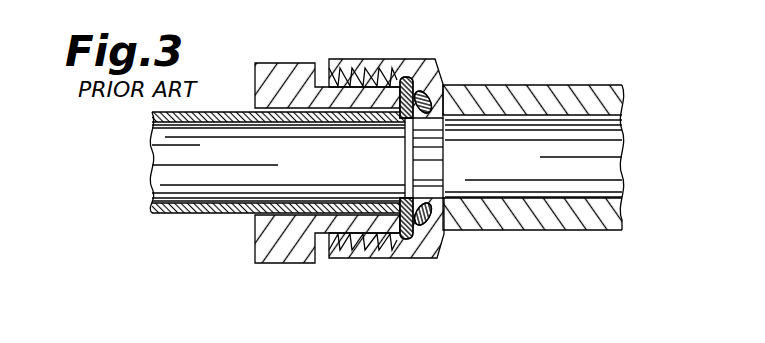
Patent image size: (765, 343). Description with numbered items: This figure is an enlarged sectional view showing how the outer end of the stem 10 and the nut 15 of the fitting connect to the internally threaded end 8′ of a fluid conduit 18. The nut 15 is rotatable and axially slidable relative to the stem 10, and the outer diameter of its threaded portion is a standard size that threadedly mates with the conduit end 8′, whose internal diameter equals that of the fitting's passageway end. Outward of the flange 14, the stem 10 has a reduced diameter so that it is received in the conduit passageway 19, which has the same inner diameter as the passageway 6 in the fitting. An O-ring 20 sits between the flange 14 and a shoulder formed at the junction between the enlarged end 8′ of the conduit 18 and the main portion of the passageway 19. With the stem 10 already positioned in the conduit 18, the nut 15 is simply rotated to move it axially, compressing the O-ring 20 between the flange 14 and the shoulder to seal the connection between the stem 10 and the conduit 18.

The passageway 6 is at (160, 190).
The internally threaded conduit end 8′ is at (341, 238).
The stem 10 is at (200, 215).
The flange 14 is at (405, 84).
The nut 15 is at (281, 63).
The fluid conduit 18 is at (483, 232).
The conduit passageway 19 is at (612, 150).
The O-ring 20 is at (416, 232).